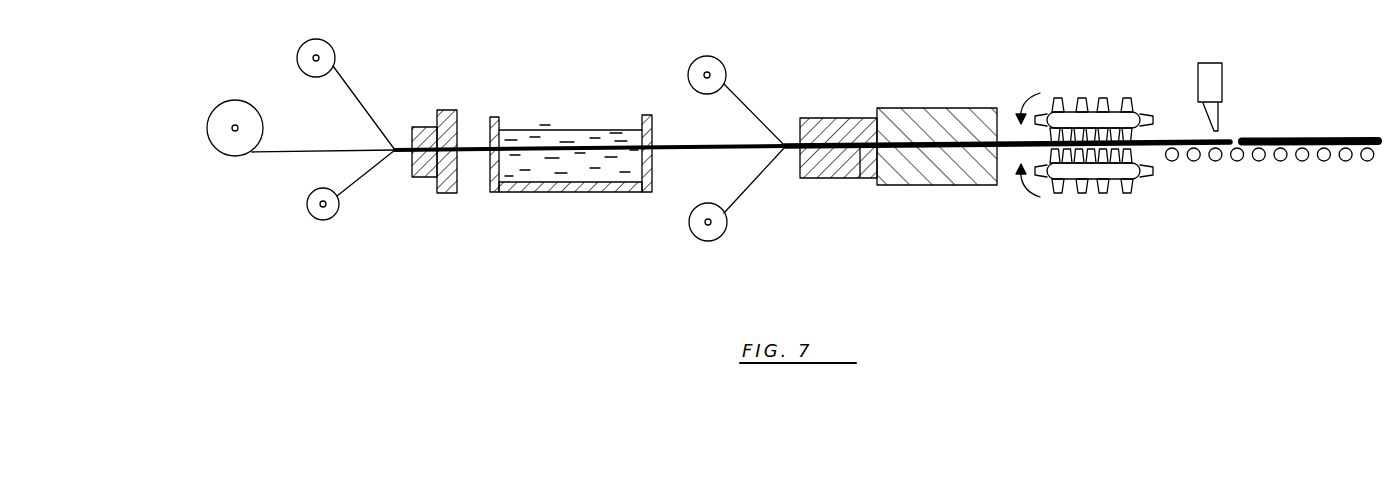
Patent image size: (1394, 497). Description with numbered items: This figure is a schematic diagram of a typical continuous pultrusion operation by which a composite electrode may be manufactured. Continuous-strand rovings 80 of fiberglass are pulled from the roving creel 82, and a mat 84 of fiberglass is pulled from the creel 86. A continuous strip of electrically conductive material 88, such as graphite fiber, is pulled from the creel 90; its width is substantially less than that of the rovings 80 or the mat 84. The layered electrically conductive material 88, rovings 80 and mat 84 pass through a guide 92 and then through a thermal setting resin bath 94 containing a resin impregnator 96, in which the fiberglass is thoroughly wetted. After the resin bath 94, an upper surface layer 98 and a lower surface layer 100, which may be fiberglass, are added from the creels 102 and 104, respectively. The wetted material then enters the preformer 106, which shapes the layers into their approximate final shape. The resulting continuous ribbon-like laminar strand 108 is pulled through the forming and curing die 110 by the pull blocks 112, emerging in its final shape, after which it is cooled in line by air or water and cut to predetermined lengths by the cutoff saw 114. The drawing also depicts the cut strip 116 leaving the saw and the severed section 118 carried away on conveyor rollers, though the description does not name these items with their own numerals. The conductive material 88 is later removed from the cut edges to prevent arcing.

The continuous-strand rovings 80 is at (339, 152).
The roving creel 82 is at (233, 100).
The mat 84 is at (360, 187).
The creel 86 is at (310, 213).
The strip of electrically conductive material 88 is at (360, 96).
The creel 90 is at (325, 40).
The guide 92 is at (450, 110).
The thermal setting resin bath 94 is at (652, 118).
The resin impregnator 96 is at (558, 130).
The upper surface layer 98 is at (755, 108).
The lower surface layer 100 is at (755, 190).
The creel 102 is at (708, 56).
The creel 104 is at (695, 233).
The preformer 106 is at (835, 118).
The continuous ribbon-like laminar strand 108 is at (862, 178).
The forming and curing die 110 is at (940, 108).
The pull blocks 112 is at (1082, 98).
The cutoff saw 114 is at (1217, 63).
The laminated strip 116 is at (1242, 137).
The cut strip on conveyor rollers 118 is at (1373, 134).